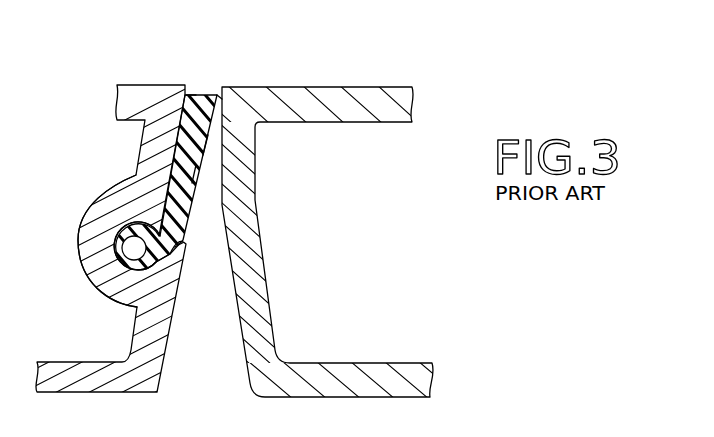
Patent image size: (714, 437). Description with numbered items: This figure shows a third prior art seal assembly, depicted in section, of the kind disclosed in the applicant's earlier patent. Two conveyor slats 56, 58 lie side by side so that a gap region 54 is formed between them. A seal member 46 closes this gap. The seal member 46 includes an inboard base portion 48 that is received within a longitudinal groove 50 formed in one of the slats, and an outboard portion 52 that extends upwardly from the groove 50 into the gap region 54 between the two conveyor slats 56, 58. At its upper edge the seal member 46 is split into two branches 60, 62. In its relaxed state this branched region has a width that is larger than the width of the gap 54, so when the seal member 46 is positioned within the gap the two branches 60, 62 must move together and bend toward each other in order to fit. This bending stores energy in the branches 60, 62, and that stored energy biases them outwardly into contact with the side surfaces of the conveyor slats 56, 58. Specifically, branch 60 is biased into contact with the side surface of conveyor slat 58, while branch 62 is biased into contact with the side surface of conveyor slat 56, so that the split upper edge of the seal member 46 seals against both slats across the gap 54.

The seal member 46 is at (193, 183).
The inboard base portion 48 is at (135, 226).
The longitudinal groove 50 is at (128, 257).
The outboard portion 52 is at (202, 155).
The gap region 54 is at (203, 96).
The conveyor slat 56 is at (145, 87).
The conveyor slat 58 is at (373, 100).
The branch 60 is at (218, 90).
The branch 62 is at (191, 94).